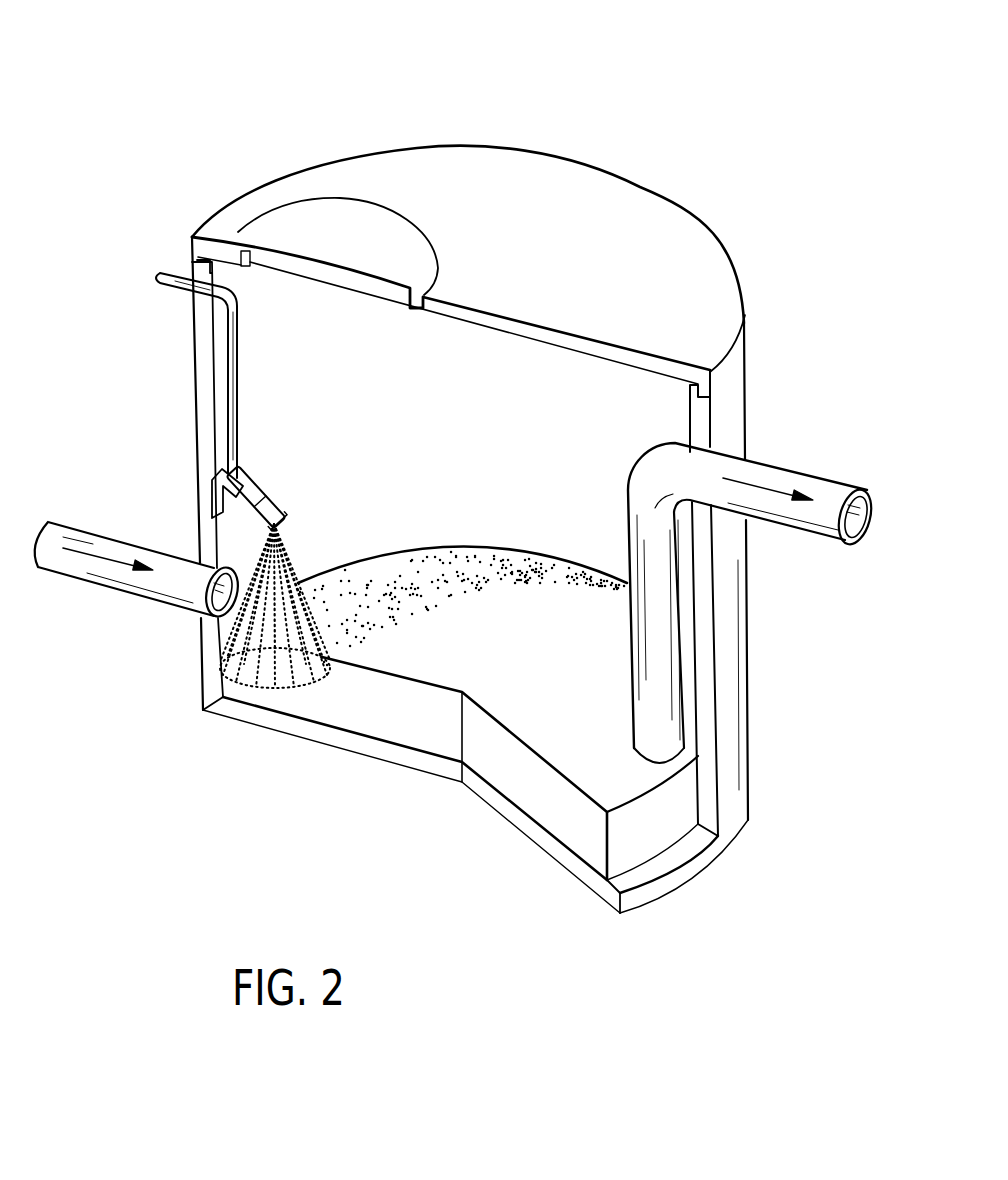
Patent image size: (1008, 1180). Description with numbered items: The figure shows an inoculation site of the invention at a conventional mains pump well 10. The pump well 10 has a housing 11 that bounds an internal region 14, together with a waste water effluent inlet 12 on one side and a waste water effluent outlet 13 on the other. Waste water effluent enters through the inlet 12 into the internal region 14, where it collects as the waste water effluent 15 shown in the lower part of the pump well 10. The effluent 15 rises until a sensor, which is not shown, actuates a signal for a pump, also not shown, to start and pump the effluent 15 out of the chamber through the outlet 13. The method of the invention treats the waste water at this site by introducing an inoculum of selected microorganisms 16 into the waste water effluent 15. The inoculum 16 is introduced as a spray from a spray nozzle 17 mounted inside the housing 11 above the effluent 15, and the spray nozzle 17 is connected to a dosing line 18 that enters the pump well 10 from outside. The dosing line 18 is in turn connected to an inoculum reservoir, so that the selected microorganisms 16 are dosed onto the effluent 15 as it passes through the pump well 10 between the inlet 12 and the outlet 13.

The pump well 10 is at (682, 117).
The housing 11 is at (733, 393).
The waste water effluent inlet 12 is at (103, 543).
The waste water effluent outlet 13 is at (815, 523).
The internal region 14 is at (483, 413).
The waste water effluent 15 is at (533, 795).
The inoculum of selected microorganisms 16 is at (290, 587).
The spray nozzle 17 is at (265, 497).
The dosing line 18 is at (170, 272).